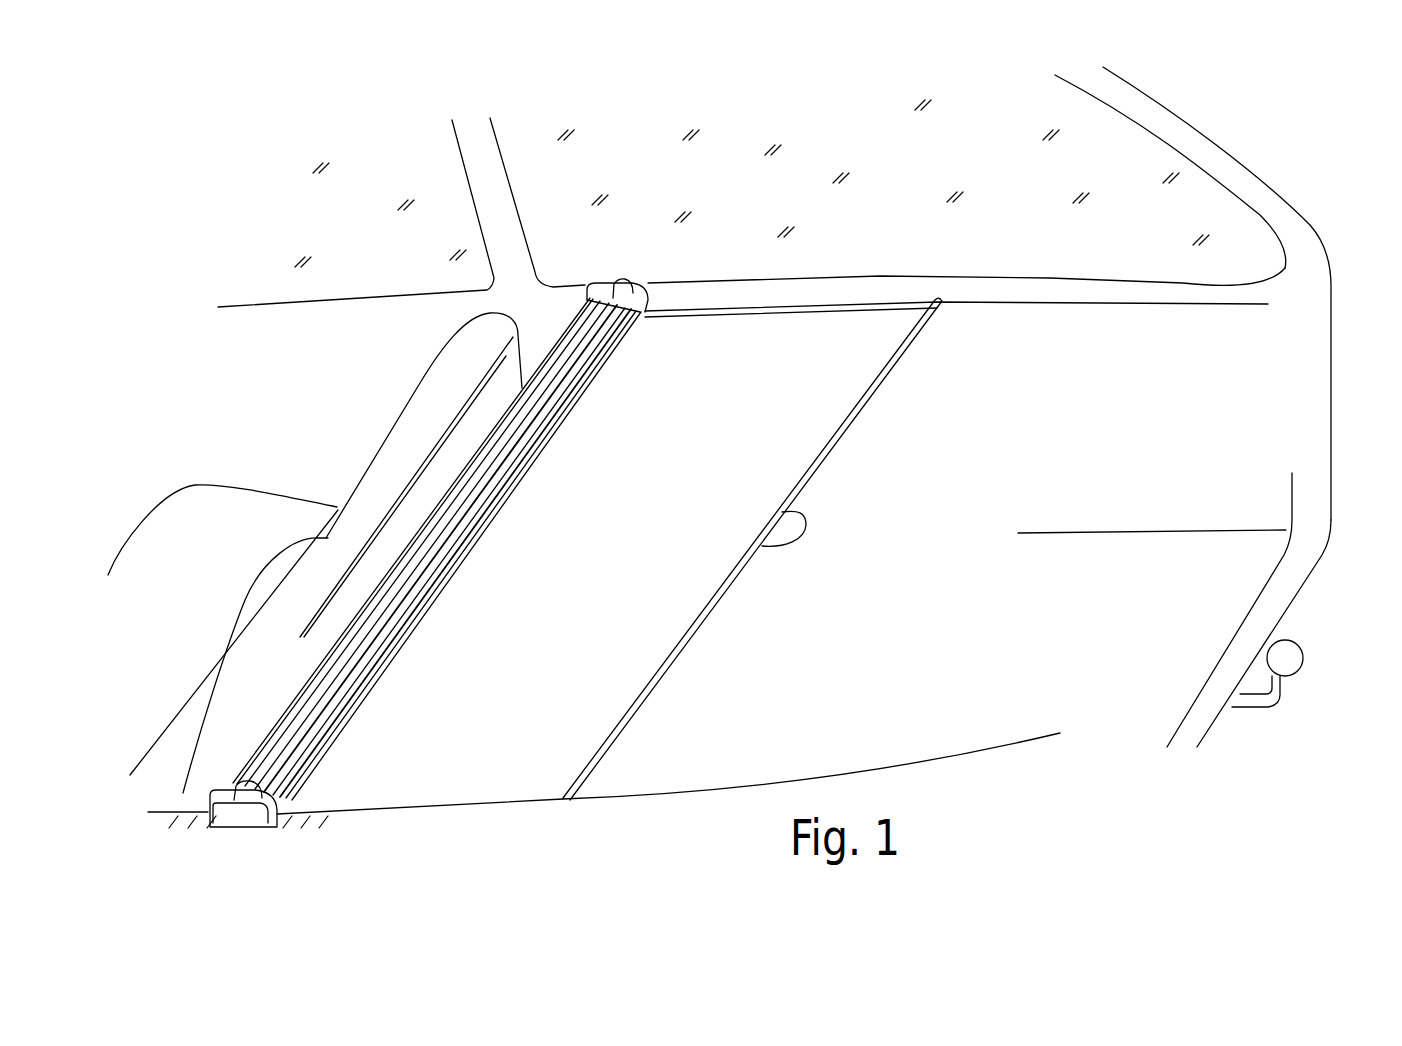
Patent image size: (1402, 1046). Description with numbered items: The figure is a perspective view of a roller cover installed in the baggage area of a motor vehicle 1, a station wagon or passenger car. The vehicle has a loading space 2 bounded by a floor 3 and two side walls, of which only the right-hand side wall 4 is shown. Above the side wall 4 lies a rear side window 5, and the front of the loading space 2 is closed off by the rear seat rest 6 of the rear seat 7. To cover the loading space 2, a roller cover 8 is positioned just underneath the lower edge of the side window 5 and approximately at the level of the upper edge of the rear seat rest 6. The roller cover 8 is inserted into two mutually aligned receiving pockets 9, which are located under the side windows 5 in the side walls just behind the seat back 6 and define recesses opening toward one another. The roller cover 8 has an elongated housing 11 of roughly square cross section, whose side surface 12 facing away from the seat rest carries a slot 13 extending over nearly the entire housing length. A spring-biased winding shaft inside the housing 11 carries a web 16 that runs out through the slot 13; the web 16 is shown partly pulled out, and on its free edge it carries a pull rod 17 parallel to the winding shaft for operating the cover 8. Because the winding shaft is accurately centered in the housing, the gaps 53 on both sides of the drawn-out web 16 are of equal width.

The motor vehicle body 1 is at (1232, 73).
The loading space 2 is at (1233, 386).
The floor 3 is at (1195, 625).
The right-hand side wall 4 is at (1070, 441).
The rear side window 5 is at (856, 150).
The rear seat rest 6 is at (422, 423).
The rear seat 7 is at (251, 507).
The roller cover 8 is at (708, 492).
The receiving pockets 9 is at (657, 309).
The housing 11 is at (518, 462).
The side surface 12 is at (383, 662).
The slot 13 is at (307, 773).
The web 16 is at (782, 467).
The pull rod 17 is at (687, 643).
The gaps 53 is at (700, 310).